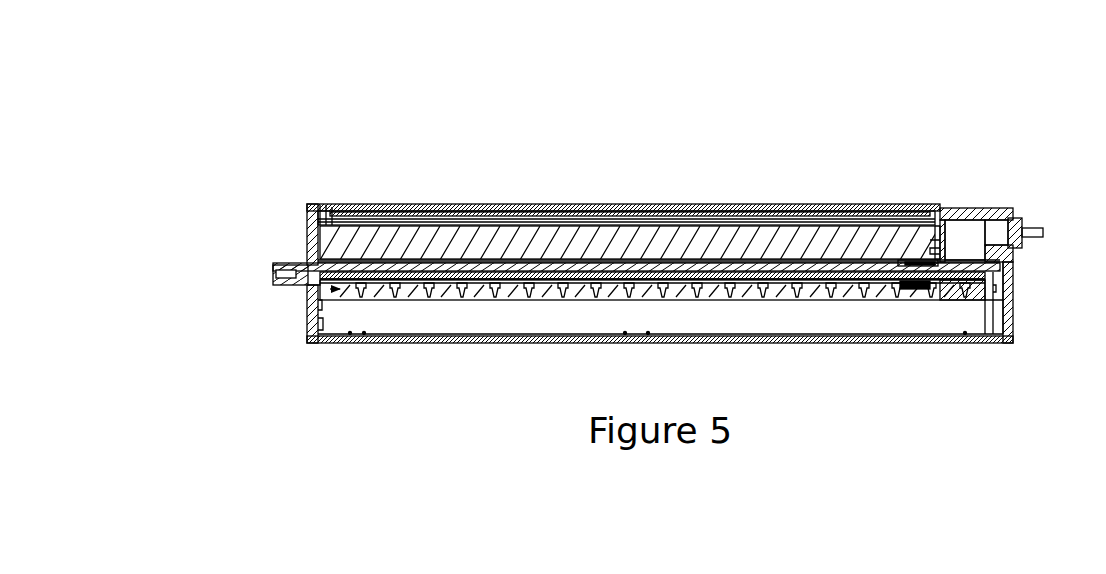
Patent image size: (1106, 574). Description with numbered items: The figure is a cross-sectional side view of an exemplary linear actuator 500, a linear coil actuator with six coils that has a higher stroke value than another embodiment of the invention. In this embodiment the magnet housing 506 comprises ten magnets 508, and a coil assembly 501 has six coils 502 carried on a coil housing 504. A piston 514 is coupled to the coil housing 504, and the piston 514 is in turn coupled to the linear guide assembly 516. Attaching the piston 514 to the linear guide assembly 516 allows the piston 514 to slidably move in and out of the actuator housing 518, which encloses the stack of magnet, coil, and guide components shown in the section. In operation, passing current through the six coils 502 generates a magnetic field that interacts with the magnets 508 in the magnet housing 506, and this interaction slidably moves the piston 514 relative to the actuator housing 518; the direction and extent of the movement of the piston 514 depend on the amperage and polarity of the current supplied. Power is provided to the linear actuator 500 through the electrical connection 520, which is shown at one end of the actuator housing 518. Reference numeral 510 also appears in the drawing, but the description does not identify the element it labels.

The linear actuator 500 is at (292, 97).
The coil assembly 501 is at (794, 260).
The coils 502 is at (847, 214).
The coil housing 504 is at (913, 262).
The magnet housing 506 is at (661, 204).
The magnets 508 is at (467, 217).
The light guide 510 is at (329, 244).
The piston 514 is at (289, 283).
The linear guide assembly 516 is at (847, 284).
The actuator housing 518 is at (362, 344).
The electrical connection 520 is at (1033, 217).